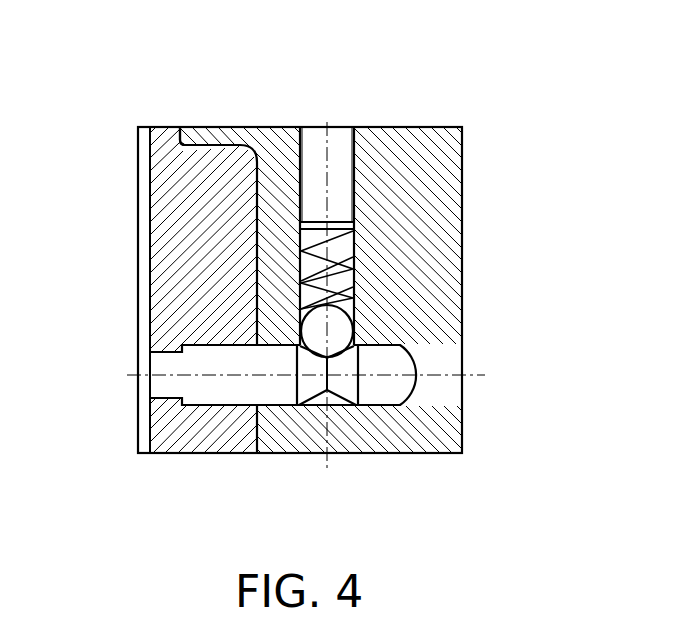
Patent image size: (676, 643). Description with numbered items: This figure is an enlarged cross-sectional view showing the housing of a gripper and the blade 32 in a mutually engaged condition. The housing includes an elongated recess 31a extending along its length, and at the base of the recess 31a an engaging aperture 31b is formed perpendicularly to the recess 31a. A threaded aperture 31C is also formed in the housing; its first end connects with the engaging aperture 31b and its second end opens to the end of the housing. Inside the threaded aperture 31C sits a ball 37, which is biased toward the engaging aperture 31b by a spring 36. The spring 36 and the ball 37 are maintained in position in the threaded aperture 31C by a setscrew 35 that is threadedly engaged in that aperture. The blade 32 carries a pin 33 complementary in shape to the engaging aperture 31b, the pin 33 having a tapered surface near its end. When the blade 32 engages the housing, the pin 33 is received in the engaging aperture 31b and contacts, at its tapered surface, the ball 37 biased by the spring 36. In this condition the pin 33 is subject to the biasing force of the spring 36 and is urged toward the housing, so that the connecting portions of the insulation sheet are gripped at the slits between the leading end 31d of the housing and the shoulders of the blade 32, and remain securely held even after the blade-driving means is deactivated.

The elongated recess 31a is at (205, 190).
The engaging aperture 31b is at (462, 410).
The threaded aperture 31C is at (340, 150).
The leading end 31d is at (185, 141).
The blade 32 is at (138, 307).
The pin 33 is at (422, 390).
The setscrew 35 is at (345, 178).
The spring 36 is at (355, 265).
The ball 37 is at (340, 330).